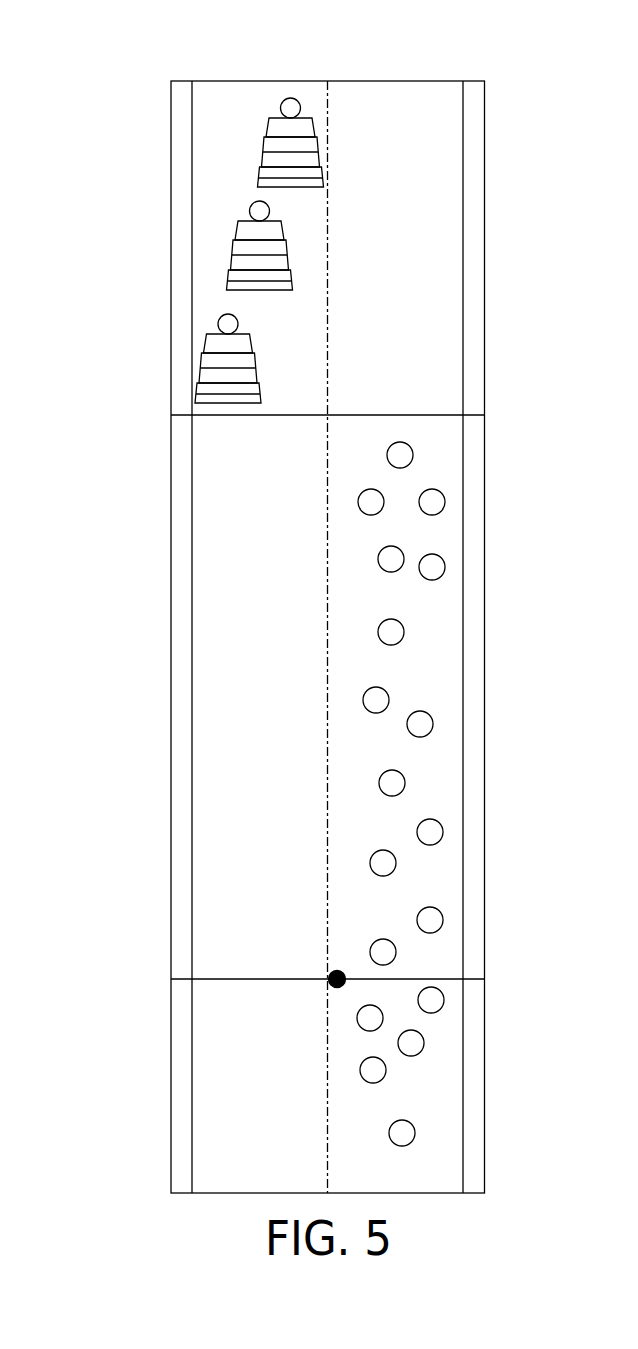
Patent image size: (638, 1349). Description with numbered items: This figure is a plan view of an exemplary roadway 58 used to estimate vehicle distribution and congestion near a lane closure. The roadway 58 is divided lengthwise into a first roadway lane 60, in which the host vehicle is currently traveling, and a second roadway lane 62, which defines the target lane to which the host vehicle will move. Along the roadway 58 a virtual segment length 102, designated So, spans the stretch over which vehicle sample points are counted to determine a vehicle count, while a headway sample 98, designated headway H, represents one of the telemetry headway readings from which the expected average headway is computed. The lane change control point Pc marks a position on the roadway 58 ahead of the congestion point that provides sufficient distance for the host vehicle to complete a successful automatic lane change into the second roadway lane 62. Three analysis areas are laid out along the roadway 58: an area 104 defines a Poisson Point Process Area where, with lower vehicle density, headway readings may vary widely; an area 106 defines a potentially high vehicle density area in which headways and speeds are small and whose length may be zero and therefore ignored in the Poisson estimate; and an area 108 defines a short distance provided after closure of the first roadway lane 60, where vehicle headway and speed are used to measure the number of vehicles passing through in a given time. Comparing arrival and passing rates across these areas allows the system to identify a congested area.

The roadway 58 is at (518, 65).
The first roadway lane 60 is at (252, 1178).
The second roadway lane 62 is at (405, 1173).
The headway sample 98 is at (389, 1133).
The virtual segment length 102 is at (158, 415).
The area 104 is at (497, 599).
The area 106 is at (497, 415).
The area 108 is at (495, 81).
The lane change control point Pc is at (328, 979).